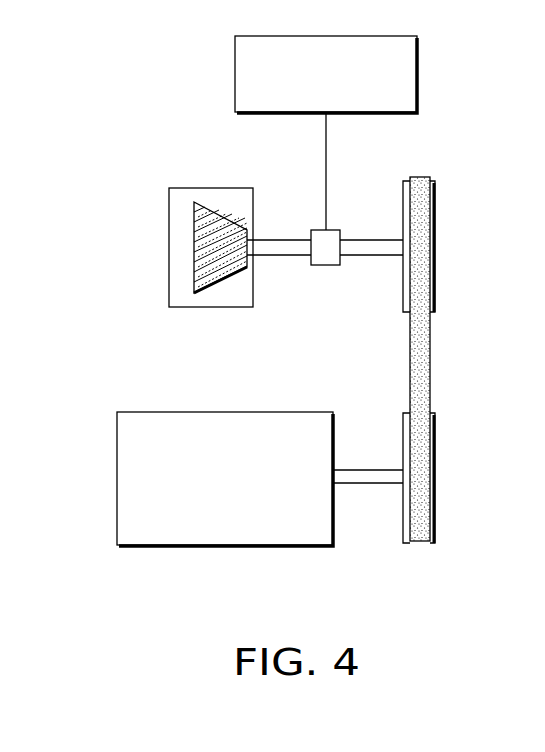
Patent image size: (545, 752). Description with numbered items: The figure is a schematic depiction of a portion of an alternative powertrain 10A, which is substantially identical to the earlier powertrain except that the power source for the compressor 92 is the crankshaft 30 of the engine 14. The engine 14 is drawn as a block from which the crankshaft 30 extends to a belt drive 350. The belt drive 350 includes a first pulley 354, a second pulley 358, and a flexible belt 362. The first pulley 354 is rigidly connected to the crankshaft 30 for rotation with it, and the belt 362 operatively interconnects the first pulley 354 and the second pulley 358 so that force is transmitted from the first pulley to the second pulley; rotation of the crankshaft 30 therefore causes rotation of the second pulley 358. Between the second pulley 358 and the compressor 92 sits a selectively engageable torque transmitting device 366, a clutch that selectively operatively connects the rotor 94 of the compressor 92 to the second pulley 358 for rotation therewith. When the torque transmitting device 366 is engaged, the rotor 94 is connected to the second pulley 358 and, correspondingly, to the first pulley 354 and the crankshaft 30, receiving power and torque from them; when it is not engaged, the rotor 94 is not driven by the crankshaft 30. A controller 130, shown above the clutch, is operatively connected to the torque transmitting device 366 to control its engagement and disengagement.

The alternative powertrain 10A is at (122, 293).
The controller 130 is at (419, 70).
The engine 14 is at (213, 547).
The compressor 92 is at (200, 187).
The rotor 94 is at (228, 222).
The torque transmitting device 366 is at (326, 266).
The crankshaft 30 is at (360, 485).
The belt drive 350 is at (465, 343).
The second pulley 358 is at (435, 268).
The flexible belt 362 is at (431, 354).
The first pulley 354 is at (436, 503).